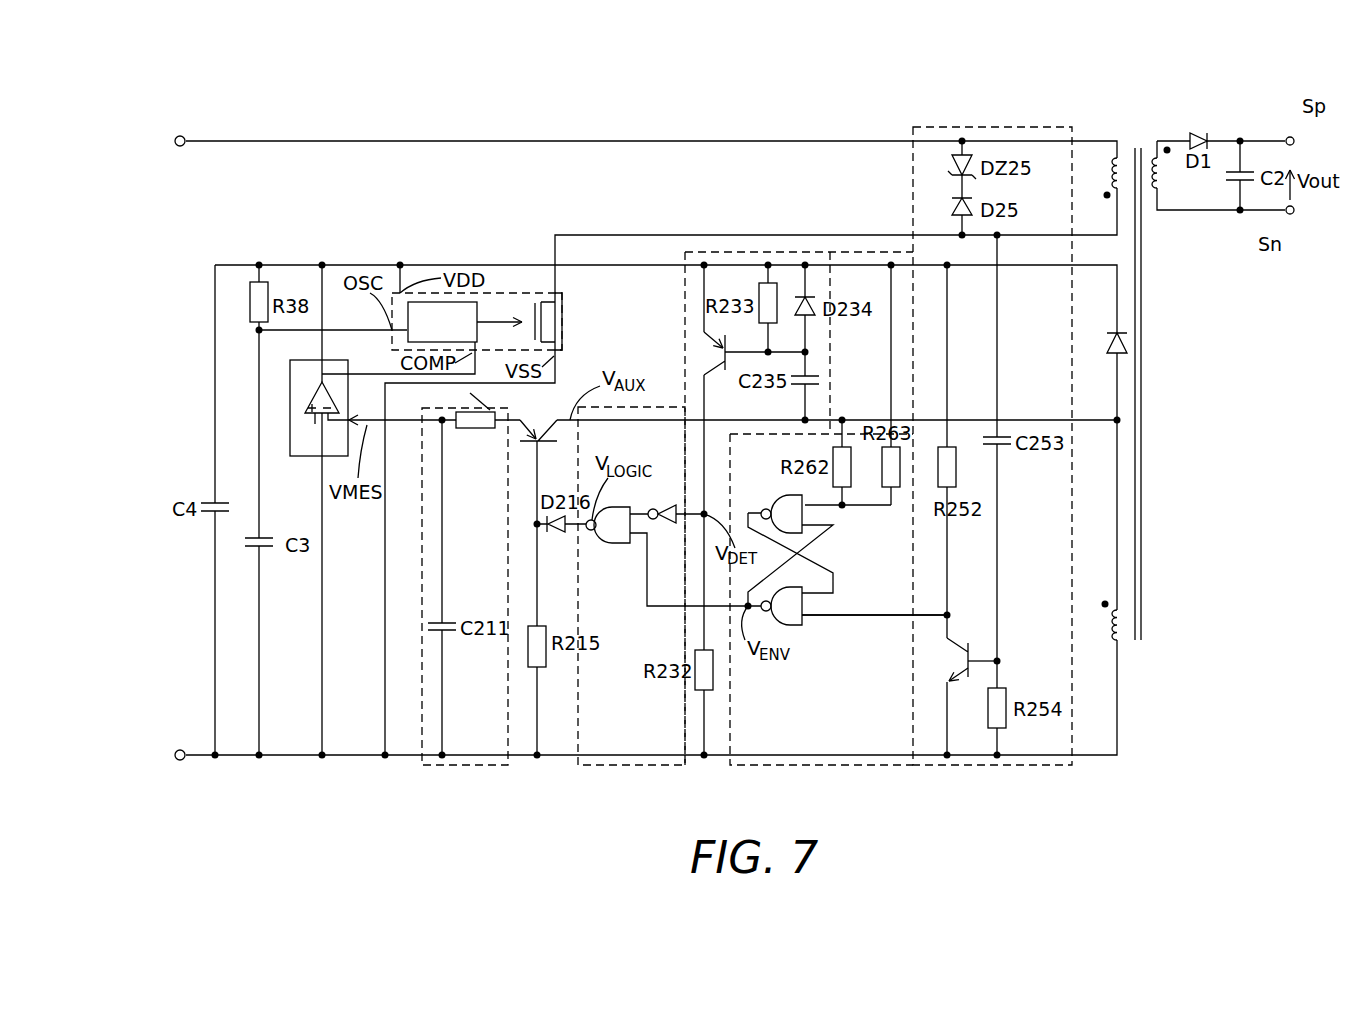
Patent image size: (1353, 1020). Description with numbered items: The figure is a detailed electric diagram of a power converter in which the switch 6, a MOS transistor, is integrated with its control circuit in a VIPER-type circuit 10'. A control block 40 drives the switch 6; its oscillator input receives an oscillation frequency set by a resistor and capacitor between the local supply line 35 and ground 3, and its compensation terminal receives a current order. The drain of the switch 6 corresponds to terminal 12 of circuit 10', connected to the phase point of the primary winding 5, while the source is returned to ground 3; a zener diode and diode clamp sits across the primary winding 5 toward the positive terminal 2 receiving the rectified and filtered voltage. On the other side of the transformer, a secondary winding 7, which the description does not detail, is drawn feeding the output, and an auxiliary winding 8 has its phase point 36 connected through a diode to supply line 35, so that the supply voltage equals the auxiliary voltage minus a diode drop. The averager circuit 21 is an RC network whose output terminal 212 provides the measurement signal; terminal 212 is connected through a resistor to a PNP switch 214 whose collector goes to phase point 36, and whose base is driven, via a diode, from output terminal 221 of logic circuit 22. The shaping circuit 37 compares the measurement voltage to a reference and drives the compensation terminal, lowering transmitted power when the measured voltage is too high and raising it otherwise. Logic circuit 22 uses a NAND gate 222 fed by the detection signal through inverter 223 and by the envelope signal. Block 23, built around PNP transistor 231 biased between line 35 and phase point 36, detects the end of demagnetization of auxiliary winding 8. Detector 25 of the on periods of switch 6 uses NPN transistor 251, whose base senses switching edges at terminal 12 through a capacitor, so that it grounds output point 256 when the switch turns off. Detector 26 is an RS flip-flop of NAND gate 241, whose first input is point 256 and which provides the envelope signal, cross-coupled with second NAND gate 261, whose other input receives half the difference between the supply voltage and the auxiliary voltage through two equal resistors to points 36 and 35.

The positive terminal 2 is at (185, 138).
The ground 3 is at (175, 760).
The primary winding 5 is at (1105, 163).
The switch 6 is at (546, 322).
The secondary winding 7 is at (1160, 166).
The auxiliary winding 8 is at (1105, 604).
The VIPER-type circuit 10' is at (591, 327).
The terminal 12 is at (556, 292).
The averager circuit 21 is at (492, 769).
The logic circuit 22 is at (620, 769).
The block of detection of the end of demagnetization 23 is at (683, 312).
The detector of the on periods of the switch 25 is at (964, 769).
The detector 26 is at (834, 769).
The local supply line 35 is at (505, 264).
The phase point of the auxiliary winding 36 is at (1115, 403).
The shaping circuit 37 is at (303, 456).
The control block 40 is at (473, 302).
The output terminal of the averager 212 is at (443, 424).
The switch 214 is at (534, 436).
The output terminal of the logic circuit 221 is at (572, 536).
The NAND gate 222 is at (618, 546).
The inverter 223 is at (666, 505).
The PNP-type bipolar transistor 231 is at (720, 352).
The NAND gate 241 is at (805, 627).
The NPN-type bipolar transistor 251 is at (946, 672).
The output point of the detector 256 is at (945, 613).
The second NAND gate 261 is at (782, 495).